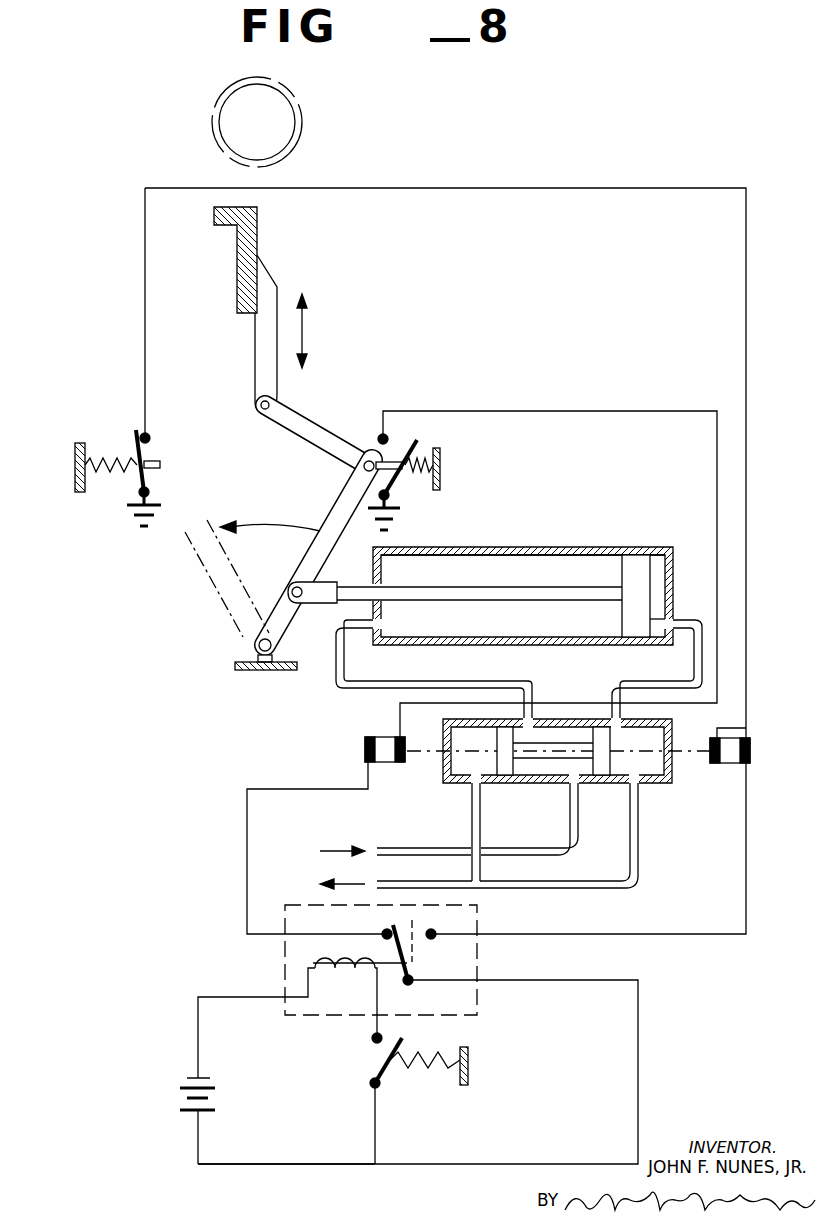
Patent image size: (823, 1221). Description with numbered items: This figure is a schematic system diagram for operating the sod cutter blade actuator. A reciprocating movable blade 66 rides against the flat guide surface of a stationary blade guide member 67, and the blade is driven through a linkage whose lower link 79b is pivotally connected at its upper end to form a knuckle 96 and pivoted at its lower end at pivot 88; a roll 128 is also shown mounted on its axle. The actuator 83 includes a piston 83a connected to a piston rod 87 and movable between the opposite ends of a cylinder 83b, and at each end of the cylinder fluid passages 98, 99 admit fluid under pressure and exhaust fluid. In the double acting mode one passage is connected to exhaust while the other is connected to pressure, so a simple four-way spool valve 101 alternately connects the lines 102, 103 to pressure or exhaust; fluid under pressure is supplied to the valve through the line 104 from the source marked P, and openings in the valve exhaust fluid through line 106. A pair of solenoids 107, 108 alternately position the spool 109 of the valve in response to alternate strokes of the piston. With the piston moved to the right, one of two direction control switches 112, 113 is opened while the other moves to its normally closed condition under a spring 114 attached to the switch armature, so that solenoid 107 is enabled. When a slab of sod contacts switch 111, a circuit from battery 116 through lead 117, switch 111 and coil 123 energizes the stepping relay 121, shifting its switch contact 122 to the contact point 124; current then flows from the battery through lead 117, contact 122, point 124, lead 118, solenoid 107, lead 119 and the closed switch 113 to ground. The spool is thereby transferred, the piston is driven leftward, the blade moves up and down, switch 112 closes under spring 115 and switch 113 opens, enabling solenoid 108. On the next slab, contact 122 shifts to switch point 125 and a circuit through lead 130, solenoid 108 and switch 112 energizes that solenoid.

The roll 128 is at (305, 106).
The reciprocating movable blade 66 is at (277, 287).
The stationary blade guide member 67 is at (237, 302).
The knuckle 96 is at (364, 455).
The direction control switch 112 is at (405, 410).
The spring 115 is at (430, 445).
The direction control switch 113 is at (126, 430).
The spring 114 is at (97, 470).
The lower link 79b is at (340, 506).
The pivot 88 is at (320, 595).
The fluid passage 99 is at (382, 625).
The actuator 83 is at (604, 543).
The piston 83a is at (637, 570).
The cylinder 83b is at (533, 550).
The piston rod 87 is at (540, 590).
The fluid passage 98 is at (658, 625).
The line 103 is at (530, 690).
The line 102 is at (590, 694).
The four-way spool valve 101 is at (412, 782).
The spool 109 is at (532, 755).
The line 104 is at (513, 850).
The line 106 is at (580, 888).
The solenoid 108 is at (364, 748).
The solenoid 107 is at (723, 763).
The lead 119 is at (746, 663).
The lead 130 is at (290, 789).
The lead 118 is at (652, 936).
The stepping relay 121 is at (322, 1030).
The switch point 125 is at (385, 932).
The contact point 124 is at (434, 936).
The switch contact 122 is at (410, 962).
The coil 123 is at (313, 950).
The switch 111 is at (382, 1060).
The battery 116 is at (182, 1088).
The lead 117 is at (330, 1164).